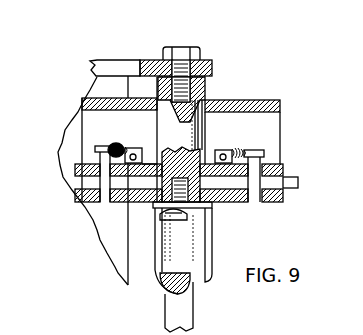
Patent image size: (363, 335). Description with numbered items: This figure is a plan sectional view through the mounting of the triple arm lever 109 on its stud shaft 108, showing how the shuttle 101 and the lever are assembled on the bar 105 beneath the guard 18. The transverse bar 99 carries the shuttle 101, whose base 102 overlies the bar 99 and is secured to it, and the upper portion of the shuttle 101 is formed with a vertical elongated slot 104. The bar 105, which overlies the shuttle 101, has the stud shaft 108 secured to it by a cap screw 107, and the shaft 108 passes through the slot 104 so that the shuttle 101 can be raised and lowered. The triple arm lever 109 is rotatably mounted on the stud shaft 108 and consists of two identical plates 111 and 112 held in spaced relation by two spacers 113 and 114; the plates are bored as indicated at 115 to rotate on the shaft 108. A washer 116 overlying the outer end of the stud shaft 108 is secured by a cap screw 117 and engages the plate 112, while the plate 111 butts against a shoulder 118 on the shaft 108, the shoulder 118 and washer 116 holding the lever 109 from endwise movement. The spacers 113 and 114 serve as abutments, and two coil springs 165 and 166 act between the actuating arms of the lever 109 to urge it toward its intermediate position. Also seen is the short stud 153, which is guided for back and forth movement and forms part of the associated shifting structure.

The guard 18 is at (82, 181).
The transverse bar 99 is at (178, 317).
The shuttle 101 is at (122, 148).
The base 102 is at (85, 128).
The vertical elongated slot 104 is at (207, 104).
The bar 105 is at (113, 68).
The cap screw 107 is at (183, 53).
The stud shaft 108 is at (203, 118).
The triple arm lever 109 is at (285, 203).
The plate 111 is at (75, 166).
The plate 112 is at (76, 193).
The spacer 113 is at (103, 180).
The spacer 114 is at (255, 184).
The bore 115 is at (148, 165).
The washer 116 is at (157, 207).
The cap screw 117 is at (187, 216).
The shoulder 118 is at (176, 148).
The short stud 153 is at (175, 250).
The coil spring 165 is at (95, 99).
The coil spring 166 is at (240, 147).